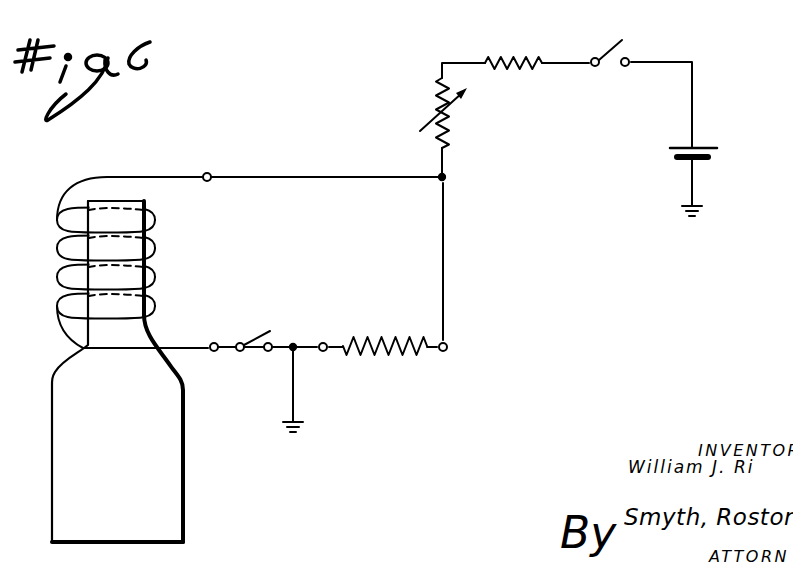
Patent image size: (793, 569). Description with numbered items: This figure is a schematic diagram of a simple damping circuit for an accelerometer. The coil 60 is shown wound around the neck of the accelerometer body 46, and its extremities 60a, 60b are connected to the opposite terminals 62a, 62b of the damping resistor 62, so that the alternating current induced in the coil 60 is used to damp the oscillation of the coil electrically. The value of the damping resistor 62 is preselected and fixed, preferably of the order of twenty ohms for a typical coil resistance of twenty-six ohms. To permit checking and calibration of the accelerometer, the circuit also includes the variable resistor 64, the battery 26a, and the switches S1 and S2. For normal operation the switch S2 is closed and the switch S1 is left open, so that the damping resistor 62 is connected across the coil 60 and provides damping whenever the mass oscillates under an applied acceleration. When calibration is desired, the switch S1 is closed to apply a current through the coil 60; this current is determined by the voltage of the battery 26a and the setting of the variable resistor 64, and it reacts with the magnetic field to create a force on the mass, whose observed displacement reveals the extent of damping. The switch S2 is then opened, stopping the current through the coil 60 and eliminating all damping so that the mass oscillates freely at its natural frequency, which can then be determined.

The vessel / bottle 46 is at (124, 416).
The coil 60 is at (155, 222).
The extremity of the coil 60a is at (209, 172).
The extremity of the coil 60b is at (214, 352).
The switch S2 is at (243, 331).
The damping resistor 62 is at (384, 336).
The terminal of the damping resistor 62a is at (323, 352).
The terminal of the damping resistor 62b is at (443, 352).
The variable resistor 64 is at (430, 122).
The switch S1 is at (610, 42).
The battery 26a is at (698, 147).